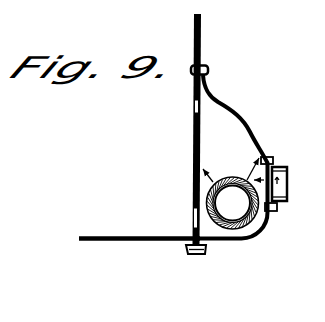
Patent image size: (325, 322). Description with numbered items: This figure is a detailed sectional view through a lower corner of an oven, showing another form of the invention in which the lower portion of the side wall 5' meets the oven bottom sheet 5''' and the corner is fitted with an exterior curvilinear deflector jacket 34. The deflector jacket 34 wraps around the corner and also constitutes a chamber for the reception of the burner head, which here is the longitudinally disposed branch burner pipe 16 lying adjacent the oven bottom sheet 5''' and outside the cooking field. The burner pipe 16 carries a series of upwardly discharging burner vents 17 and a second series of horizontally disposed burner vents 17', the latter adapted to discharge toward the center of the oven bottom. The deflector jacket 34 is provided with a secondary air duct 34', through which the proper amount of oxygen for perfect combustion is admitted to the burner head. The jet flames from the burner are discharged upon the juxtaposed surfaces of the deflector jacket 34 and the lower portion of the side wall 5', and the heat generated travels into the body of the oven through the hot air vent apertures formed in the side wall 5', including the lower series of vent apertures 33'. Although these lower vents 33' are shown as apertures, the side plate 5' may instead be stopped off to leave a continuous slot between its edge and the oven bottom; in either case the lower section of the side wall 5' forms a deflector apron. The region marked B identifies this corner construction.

The side wall 5' is at (214, 129).
The oven bottom sheet 5''' is at (139, 252).
The lower series of hot air vent apertures 33' is at (175, 164).
The curvilinear deflector jacket 34 is at (244, 157).
The secondary air duct 34' is at (283, 174).
The upwardly discharging burner vents 17 is at (233, 191).
The horizontally disposed burner vents 17' is at (185, 179).
The branch burner pipe 16 is at (232, 229).
The section B is at (321, 220).